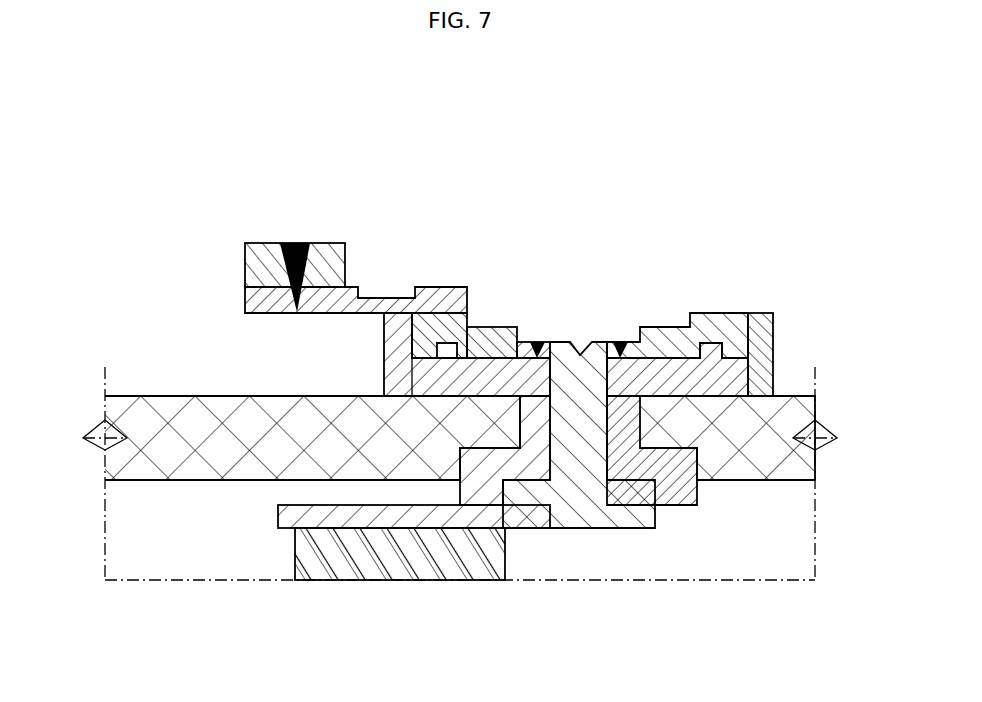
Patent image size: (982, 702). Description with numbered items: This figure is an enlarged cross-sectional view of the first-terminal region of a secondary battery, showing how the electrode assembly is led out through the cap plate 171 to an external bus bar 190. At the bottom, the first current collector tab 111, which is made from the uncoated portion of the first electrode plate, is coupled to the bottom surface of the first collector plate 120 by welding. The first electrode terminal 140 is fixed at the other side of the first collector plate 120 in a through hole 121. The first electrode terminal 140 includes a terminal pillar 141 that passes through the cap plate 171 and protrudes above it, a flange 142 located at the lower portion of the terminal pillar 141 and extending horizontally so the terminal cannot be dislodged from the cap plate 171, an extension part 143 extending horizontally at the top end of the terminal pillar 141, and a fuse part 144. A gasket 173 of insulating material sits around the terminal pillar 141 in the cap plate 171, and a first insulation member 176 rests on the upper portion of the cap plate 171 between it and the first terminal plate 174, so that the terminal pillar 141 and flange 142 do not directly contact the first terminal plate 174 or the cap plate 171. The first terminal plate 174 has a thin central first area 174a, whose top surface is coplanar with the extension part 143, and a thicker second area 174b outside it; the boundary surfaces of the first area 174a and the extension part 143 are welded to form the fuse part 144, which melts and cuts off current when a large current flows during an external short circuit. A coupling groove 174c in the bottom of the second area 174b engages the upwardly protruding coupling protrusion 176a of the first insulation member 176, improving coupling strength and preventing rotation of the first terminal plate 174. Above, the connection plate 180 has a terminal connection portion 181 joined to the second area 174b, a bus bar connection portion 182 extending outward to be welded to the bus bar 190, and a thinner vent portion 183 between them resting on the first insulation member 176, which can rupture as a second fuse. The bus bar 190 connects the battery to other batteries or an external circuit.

The first current collector tab 111 is at (388, 560).
The first collector plate 120 is at (293, 515).
The through hole 121 is at (595, 515).
The first electrode terminal 140 is at (676, 330).
The terminal pillar 141 is at (588, 419).
The flange 142 is at (677, 470).
The extension part 143 is at (603, 345).
The fuse part 144 is at (619, 345).
The cap plate 171 is at (195, 412).
The gasket 173 is at (677, 498).
The first terminal plate 174 is at (482, 273).
The first area 174a is at (534, 304).
The second area 174b is at (428, 327).
The coupling groove 174c is at (462, 330).
The first insulation member 176 is at (417, 354).
The coupling protrusion 176a is at (420, 390).
The connection plate 180 is at (356, 219).
The terminal connection portion 181 is at (425, 244).
The bus bar connection portion 182 is at (337, 298).
The vent portion 183 is at (377, 297).
The bus bar 190 is at (257, 268).